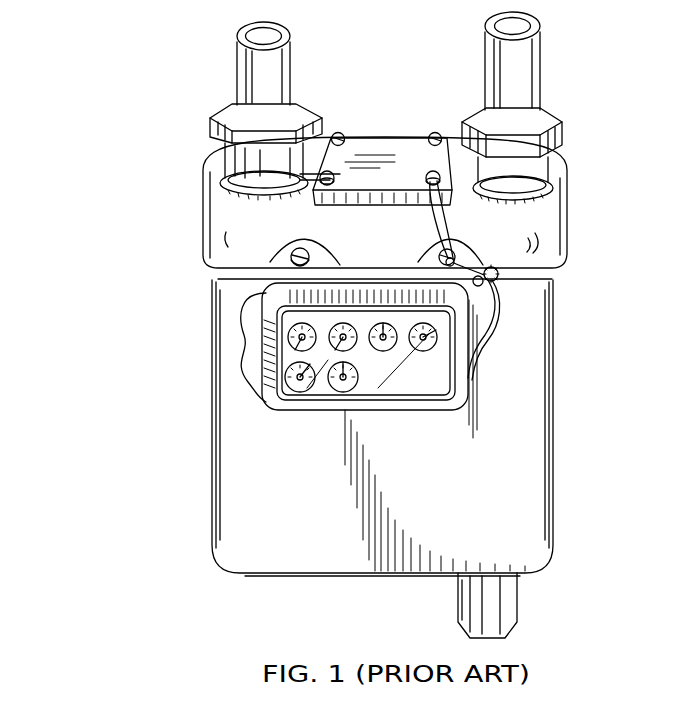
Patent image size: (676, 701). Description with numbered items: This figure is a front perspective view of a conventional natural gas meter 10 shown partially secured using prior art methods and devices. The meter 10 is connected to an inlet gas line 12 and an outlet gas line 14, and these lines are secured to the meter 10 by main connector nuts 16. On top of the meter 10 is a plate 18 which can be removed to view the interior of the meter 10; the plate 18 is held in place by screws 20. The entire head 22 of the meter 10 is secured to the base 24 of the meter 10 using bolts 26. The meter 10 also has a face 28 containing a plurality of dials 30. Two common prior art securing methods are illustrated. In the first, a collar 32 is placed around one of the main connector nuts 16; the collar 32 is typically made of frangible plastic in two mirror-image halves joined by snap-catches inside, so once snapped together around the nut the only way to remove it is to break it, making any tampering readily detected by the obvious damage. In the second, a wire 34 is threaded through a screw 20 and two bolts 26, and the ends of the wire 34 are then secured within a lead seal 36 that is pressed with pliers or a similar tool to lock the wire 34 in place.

The gas meter 10 is at (112, 331).
The inlet gas line 12 is at (275, 58).
The outlet gas line 14 is at (527, 63).
The main connector nuts 16 is at (230, 168).
The plate 18 is at (380, 143).
The screws 20 is at (343, 145).
The head 22 is at (537, 215).
The base 24 is at (524, 402).
The bolts 26 is at (296, 250).
The face 28 is at (388, 388).
The dials 30 is at (290, 336).
The collar 32 is at (305, 117).
The wire 34 is at (435, 218).
The seal 36 is at (493, 265).